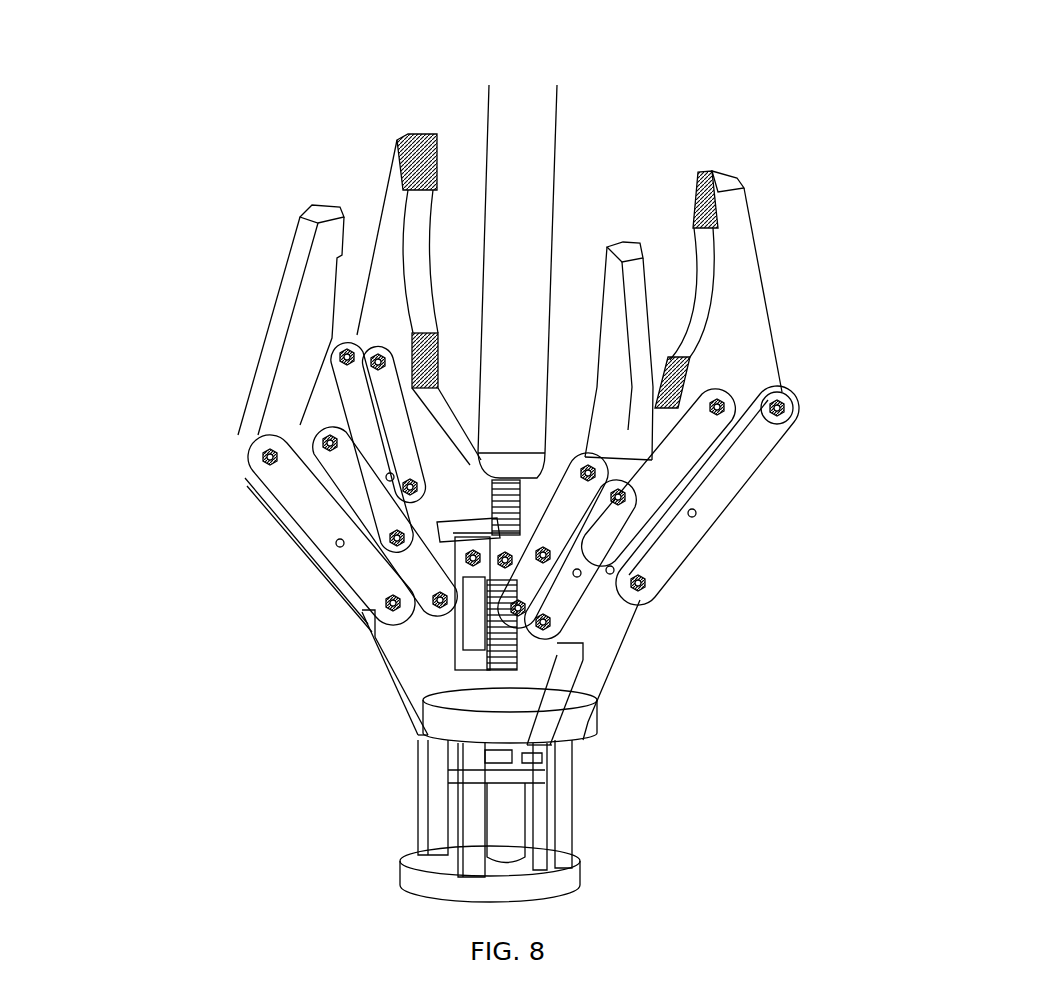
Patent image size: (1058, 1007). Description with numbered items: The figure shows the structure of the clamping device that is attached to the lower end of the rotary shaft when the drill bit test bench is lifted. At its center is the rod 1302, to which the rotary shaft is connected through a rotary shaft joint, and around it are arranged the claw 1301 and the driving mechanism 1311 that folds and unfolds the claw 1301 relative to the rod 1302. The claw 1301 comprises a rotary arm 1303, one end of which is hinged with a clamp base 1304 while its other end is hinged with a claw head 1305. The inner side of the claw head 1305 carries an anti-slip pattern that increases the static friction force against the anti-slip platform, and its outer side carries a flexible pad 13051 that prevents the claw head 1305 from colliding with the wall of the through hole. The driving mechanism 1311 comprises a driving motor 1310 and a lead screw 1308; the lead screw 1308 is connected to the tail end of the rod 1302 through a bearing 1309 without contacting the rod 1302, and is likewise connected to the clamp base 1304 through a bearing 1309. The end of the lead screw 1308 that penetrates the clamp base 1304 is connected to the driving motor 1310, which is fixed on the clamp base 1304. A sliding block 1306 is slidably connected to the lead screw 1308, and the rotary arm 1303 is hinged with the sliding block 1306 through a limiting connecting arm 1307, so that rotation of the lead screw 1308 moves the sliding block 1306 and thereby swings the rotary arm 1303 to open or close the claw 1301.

The claw 1301 is at (787, 412).
The rod 1302 is at (547, 137).
The rotary arm 1303 is at (717, 482).
The clamp base 1304 is at (593, 720).
The claw head 1305 is at (738, 298).
The flexible pad 13051 is at (742, 192).
The sliding block 1306 is at (467, 570).
The limiting connecting arm 1307 is at (457, 501).
The lead screw 1308 is at (455, 475).
The bearing 1309 is at (373, 375).
The driving motor 1310 is at (502, 808).
The driving mechanism 1311 is at (140, 245).